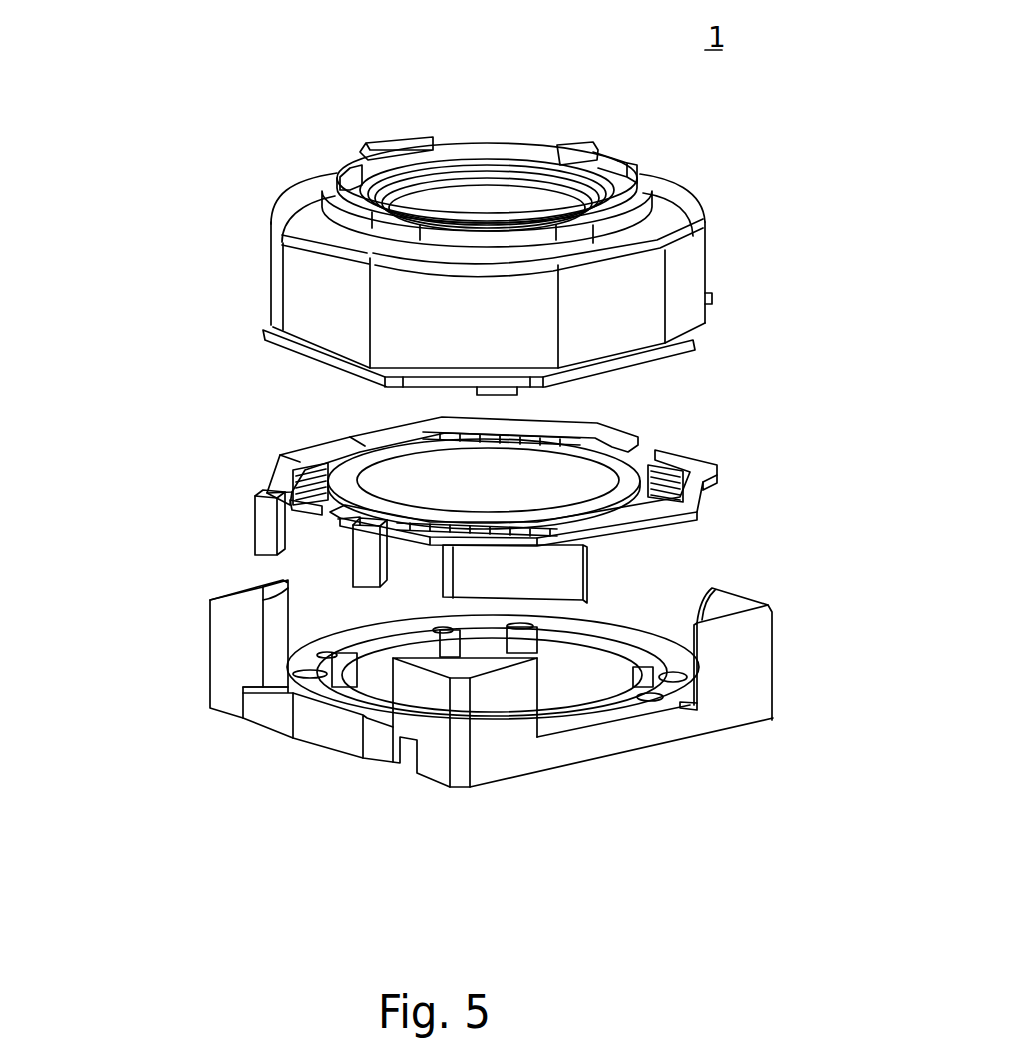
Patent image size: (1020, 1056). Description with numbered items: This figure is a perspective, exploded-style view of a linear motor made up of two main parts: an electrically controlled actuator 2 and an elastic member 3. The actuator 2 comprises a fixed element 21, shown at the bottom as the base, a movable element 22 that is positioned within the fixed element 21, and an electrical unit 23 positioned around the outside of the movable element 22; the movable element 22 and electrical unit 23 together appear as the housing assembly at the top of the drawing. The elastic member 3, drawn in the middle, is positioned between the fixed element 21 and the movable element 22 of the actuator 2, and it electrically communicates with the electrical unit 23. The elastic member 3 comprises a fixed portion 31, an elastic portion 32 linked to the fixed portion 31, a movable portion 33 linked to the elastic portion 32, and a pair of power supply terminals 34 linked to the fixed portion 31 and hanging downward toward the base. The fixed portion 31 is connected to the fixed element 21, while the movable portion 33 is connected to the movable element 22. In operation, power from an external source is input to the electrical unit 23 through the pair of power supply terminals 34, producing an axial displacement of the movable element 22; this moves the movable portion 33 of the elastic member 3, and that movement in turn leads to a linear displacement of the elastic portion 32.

The electrically controlled actuator 2 is at (102, 120).
The elastic member 3 is at (745, 503).
The fixed element 21 is at (227, 662).
The movable element 22 is at (403, 156).
The electrical unit 23 is at (306, 290).
The fixed portion 31 is at (350, 435).
The elastic portion 32 is at (578, 432).
The movable portion 33 is at (398, 453).
The power supply terminals 34 is at (263, 537).